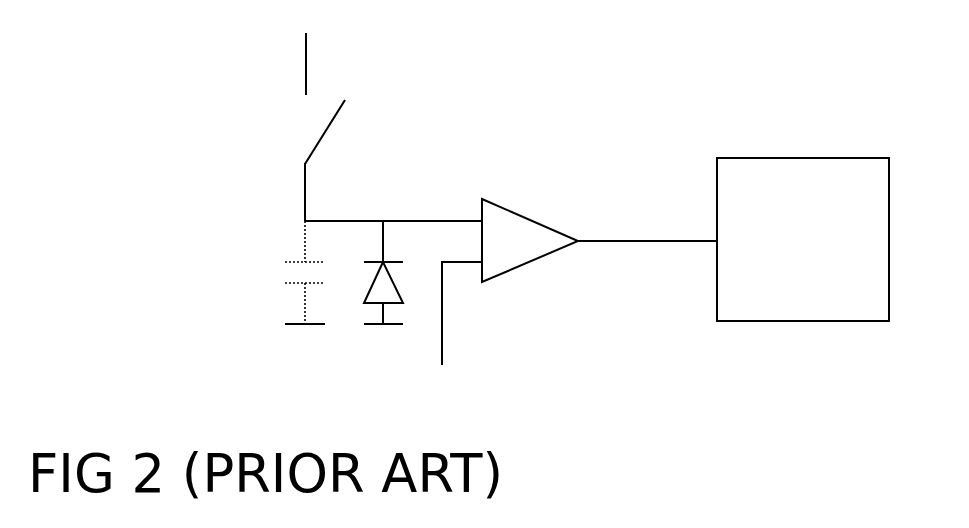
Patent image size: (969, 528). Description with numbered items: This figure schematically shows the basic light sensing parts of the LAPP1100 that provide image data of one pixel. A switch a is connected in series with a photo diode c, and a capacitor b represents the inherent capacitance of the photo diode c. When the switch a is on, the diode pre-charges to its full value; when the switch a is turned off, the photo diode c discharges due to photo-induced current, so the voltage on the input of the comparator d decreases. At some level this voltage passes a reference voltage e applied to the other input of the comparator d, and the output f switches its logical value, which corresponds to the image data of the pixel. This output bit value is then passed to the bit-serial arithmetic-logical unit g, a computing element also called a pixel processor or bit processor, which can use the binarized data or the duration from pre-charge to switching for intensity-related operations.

The switch a is at (302, 127).
The capacitor b is at (292, 272).
The photo diode c is at (393, 272).
The comparator d is at (530, 240).
The reference voltage e is at (462, 313).
The output f is at (647, 218).
The bit-serial arithmetic-logical unit g is at (803, 239).